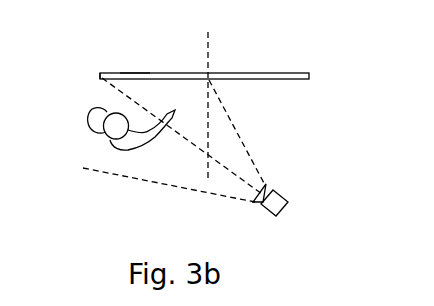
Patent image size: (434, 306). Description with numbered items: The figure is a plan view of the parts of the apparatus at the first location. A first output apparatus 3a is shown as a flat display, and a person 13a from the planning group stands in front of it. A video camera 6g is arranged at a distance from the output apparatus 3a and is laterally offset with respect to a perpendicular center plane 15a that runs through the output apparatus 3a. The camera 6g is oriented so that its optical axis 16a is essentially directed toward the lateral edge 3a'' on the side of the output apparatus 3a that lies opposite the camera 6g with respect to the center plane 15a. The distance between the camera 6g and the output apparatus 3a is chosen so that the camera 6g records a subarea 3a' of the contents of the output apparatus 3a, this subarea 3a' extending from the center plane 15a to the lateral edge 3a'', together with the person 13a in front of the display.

The first output apparatus 3a is at (204, 109).
The subarea 3a' is at (140, 42).
The lateral edge 3a'' is at (66, 63).
The optical axis 16a is at (110, 87).
The perpendicular center plane 15a is at (208, 46).
The person 13a is at (106, 133).
The video camera 6g is at (283, 207).